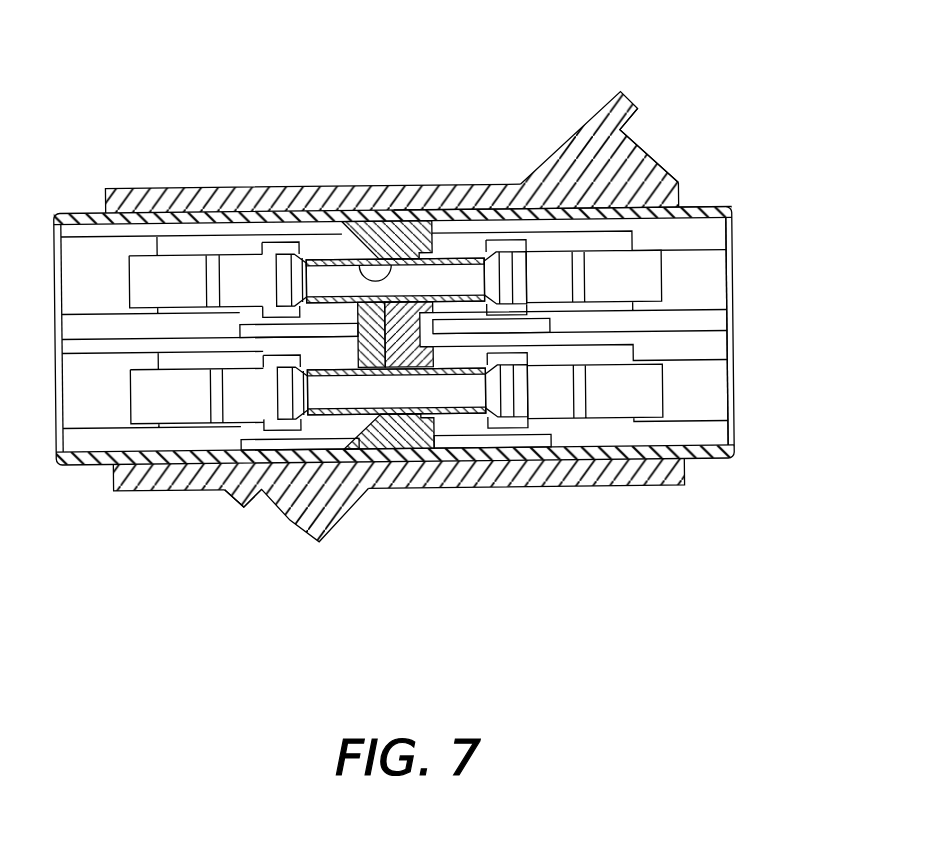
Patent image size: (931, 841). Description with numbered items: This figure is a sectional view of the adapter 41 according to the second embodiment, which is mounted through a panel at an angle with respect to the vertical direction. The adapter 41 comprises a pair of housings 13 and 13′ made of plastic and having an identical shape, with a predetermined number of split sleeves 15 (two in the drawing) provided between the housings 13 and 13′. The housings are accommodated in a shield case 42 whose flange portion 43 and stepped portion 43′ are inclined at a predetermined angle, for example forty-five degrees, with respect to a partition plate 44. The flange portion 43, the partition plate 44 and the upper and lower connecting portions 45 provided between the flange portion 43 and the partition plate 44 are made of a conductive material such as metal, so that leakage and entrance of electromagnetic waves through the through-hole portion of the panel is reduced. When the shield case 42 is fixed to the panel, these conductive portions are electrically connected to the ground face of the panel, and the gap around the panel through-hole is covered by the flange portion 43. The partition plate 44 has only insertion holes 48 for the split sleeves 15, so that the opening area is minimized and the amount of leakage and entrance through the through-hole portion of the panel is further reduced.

The housing 13 is at (80, 208).
The housing 13′ is at (708, 204).
The split sleeve 15 is at (433, 377).
The adapter 41 is at (412, 160).
The shield case 42 is at (233, 184).
The flange portion 43 is at (636, 100).
The stepped portion 43′ is at (652, 162).
The partition plate 44 is at (438, 375).
The upper and lower connecting portions 45 is at (470, 195).
The insertion hole 48 is at (370, 265).